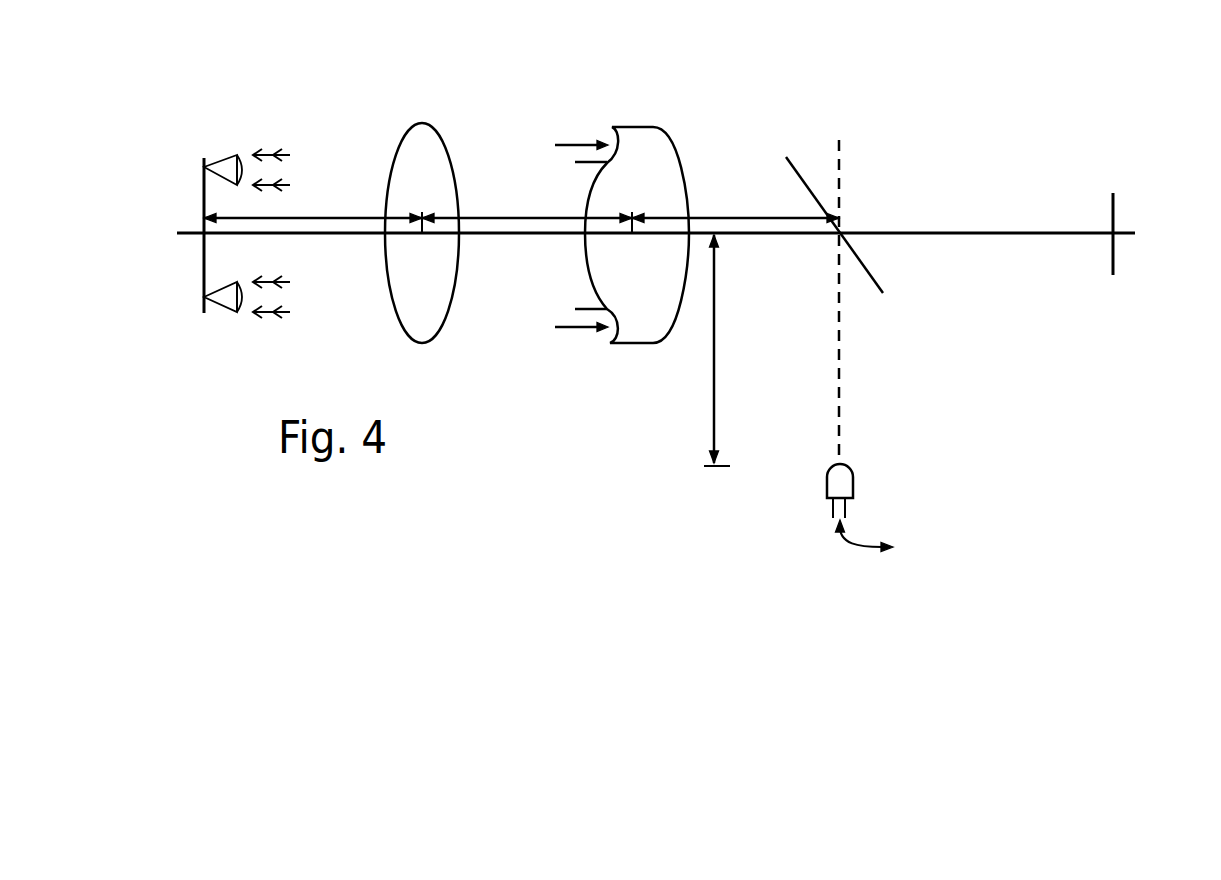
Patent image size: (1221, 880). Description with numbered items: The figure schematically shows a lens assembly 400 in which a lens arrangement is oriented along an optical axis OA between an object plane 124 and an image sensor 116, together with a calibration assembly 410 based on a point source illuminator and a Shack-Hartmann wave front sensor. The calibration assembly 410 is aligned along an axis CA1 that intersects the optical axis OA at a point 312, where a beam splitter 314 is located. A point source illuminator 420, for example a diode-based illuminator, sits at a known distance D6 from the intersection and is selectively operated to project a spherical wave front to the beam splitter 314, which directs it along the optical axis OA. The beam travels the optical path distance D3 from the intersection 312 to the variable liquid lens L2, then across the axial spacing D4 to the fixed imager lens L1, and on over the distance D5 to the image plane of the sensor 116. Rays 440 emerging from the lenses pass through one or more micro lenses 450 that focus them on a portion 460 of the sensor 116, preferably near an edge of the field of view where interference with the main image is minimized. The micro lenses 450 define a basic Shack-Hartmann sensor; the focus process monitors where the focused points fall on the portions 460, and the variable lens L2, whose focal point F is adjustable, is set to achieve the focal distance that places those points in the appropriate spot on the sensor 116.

The sensor 116 is at (204, 268).
The target plane 124 is at (1117, 208).
The intersection 312 is at (843, 230).
The beam splitter 314 is at (800, 173).
The lens assembly 400 is at (1050, 108).
The calibration assembly 410 is at (958, 438).
The point source illuminator 420 is at (825, 490).
The rays 440 is at (289, 184).
The micro lenses 450 is at (238, 152).
The portion of the sensor 460 is at (204, 167).
The fixed lens L1 is at (428, 120).
The variable liquid lens L2 is at (643, 120).
The focal point F is at (570, 142).
The optical path distance D3 is at (700, 218).
The axial spacing D4 is at (466, 218).
The distance D5 is at (343, 218).
The known distance D6 is at (714, 342).
The optical axis OA is at (1127, 236).
The calibration axis CA1 is at (840, 437).